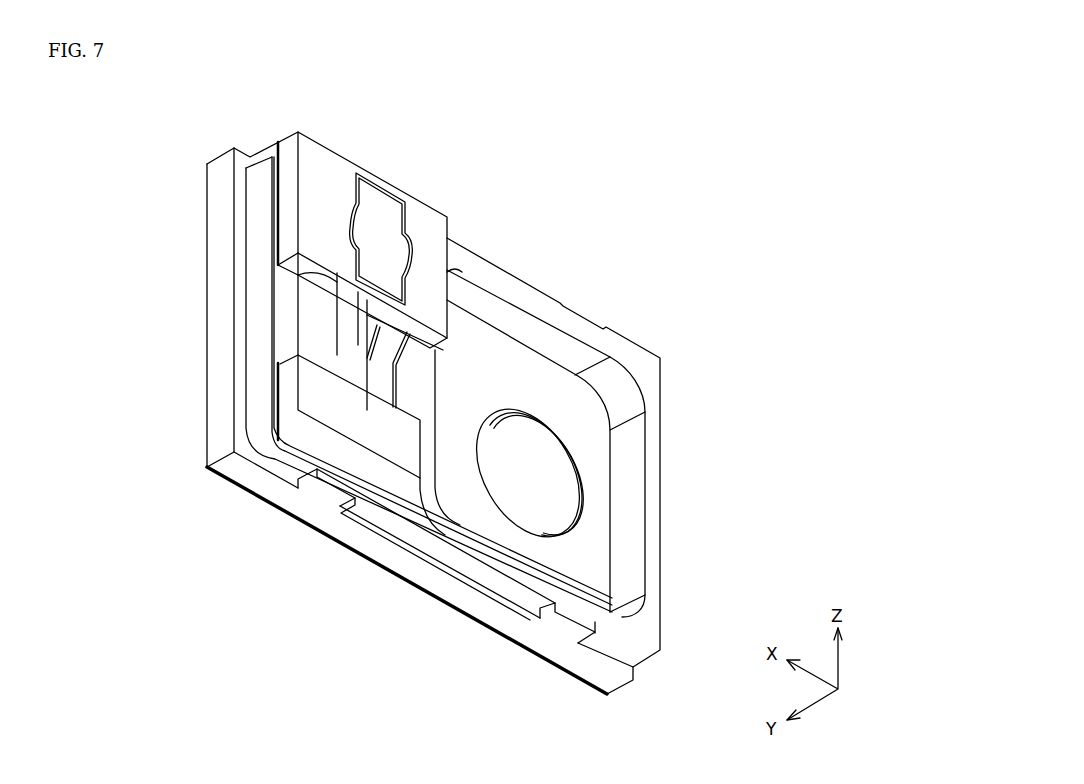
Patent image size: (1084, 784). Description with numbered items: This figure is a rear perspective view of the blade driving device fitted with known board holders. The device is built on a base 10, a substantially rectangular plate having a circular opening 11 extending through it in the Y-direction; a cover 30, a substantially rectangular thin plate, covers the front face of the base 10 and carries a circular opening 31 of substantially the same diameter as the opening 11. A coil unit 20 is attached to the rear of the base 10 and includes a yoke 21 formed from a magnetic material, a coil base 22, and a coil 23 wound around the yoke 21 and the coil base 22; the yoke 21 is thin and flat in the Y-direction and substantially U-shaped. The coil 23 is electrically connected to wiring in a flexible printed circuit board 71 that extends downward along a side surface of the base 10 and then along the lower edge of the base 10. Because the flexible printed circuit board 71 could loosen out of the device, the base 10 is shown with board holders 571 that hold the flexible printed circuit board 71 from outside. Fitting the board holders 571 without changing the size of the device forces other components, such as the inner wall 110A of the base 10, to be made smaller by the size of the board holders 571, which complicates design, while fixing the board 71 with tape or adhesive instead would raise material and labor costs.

The base 10 is at (653, 390).
The opening 11 is at (530, 495).
The opening 31 is at (536, 474).
The coil unit 20 is at (385, 163).
The yoke 21 is at (383, 352).
The coil base 22 is at (430, 213).
The coil 23 is at (308, 308).
The cover 30 is at (205, 365).
The flexible printed circuit board 71 is at (405, 528).
The board holder 571 is at (323, 493).
The inner wall 110A is at (542, 575).